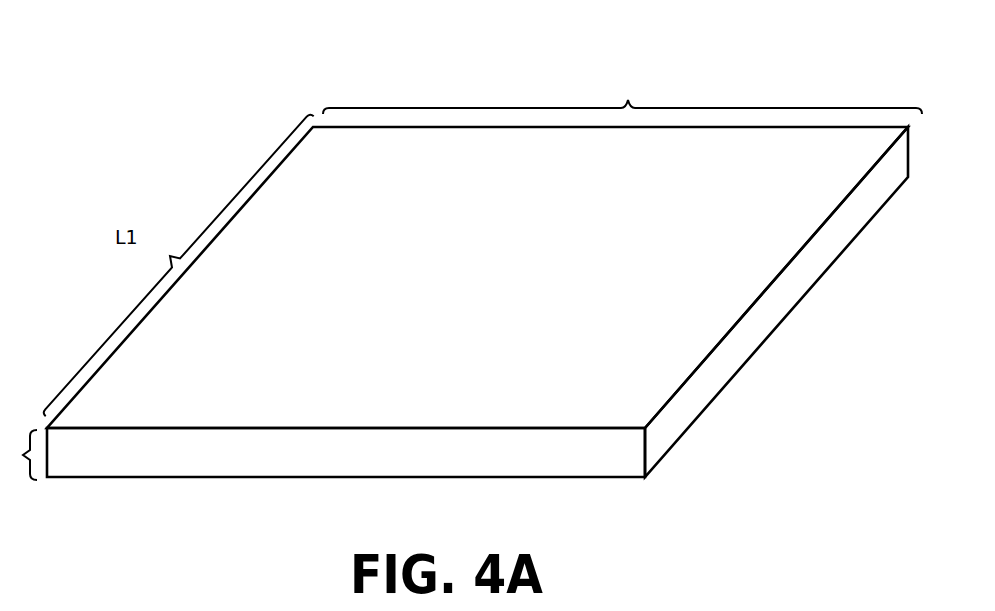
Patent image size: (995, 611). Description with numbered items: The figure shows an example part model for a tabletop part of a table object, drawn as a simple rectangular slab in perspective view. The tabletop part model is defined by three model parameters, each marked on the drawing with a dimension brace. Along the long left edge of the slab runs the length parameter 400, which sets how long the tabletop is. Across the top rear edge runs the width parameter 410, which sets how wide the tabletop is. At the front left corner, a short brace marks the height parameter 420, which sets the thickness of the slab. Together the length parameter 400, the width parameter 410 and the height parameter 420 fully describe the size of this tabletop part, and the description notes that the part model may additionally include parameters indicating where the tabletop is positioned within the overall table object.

The length parameter 400 is at (133, 205).
The width parameter 410 is at (596, 62).
The height parameter 420 is at (19, 475).